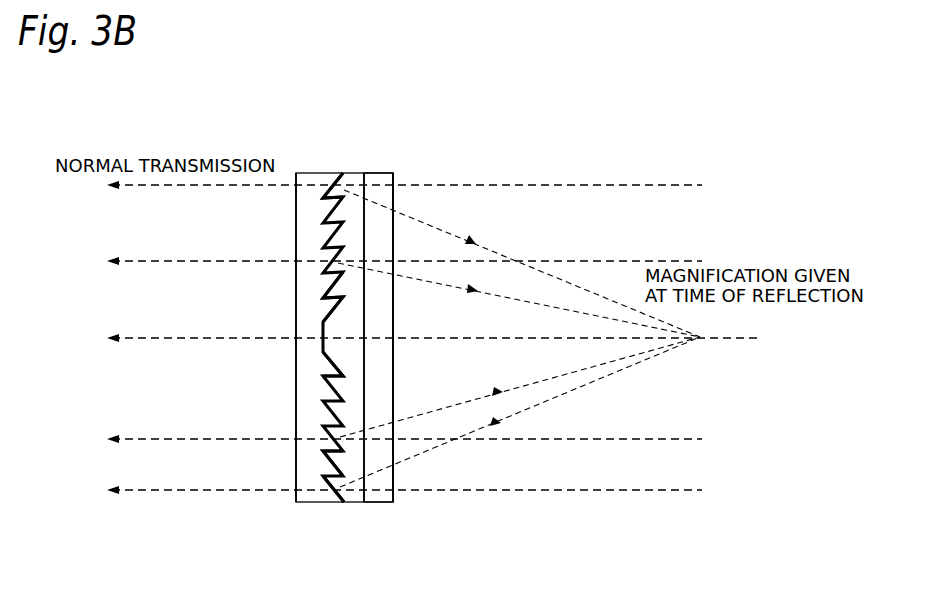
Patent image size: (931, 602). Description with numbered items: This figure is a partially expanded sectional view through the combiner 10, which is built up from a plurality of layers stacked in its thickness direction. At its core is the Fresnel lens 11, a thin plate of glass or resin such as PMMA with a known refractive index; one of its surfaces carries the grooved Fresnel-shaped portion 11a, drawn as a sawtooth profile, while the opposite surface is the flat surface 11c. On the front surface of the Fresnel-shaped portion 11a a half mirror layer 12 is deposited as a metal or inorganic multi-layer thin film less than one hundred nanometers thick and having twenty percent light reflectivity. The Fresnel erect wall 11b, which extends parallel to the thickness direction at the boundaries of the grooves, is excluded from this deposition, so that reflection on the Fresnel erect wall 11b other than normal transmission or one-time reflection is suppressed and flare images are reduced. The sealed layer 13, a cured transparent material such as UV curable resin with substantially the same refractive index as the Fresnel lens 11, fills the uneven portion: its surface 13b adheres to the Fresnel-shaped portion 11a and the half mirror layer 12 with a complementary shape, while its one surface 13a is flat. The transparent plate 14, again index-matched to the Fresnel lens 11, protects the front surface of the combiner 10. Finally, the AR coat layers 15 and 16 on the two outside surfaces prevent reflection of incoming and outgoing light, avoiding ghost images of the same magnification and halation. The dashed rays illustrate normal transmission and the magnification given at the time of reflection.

The combiner 10 is at (327, 93).
The Fresnel lens 11 is at (313, 478).
The Fresnel-shaped portion 11a is at (340, 308).
The Fresnel erect wall 11b is at (340, 200).
The flat surface 11c is at (333, 463).
The half mirror layer 12 is at (338, 362).
The sealed layer 13 is at (353, 475).
The one surface of the sealed layer 13a is at (365, 351).
The surface adhered with the Fresnel-shaped portion 13b is at (340, 480).
The transparent plate 14 is at (382, 457).
The AR coat layer 15 is at (296, 193).
The AR coat layer 16 is at (419, 191).